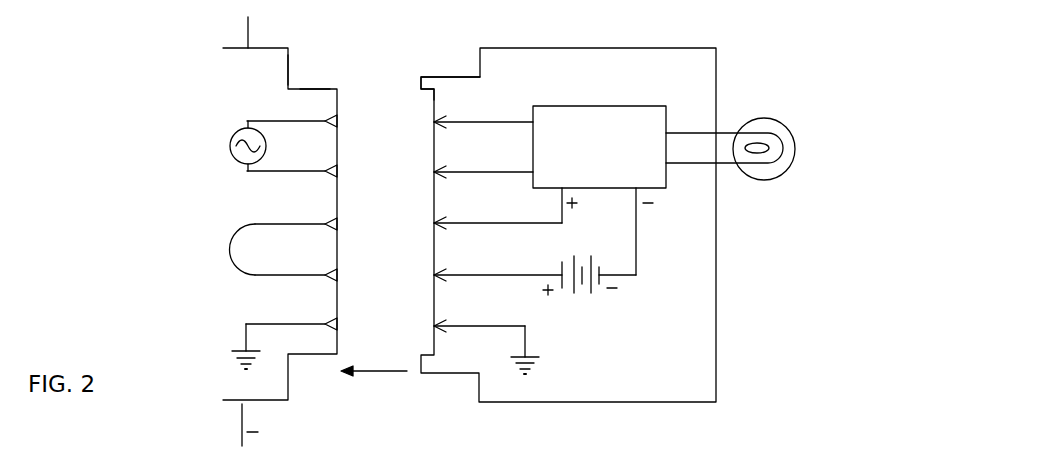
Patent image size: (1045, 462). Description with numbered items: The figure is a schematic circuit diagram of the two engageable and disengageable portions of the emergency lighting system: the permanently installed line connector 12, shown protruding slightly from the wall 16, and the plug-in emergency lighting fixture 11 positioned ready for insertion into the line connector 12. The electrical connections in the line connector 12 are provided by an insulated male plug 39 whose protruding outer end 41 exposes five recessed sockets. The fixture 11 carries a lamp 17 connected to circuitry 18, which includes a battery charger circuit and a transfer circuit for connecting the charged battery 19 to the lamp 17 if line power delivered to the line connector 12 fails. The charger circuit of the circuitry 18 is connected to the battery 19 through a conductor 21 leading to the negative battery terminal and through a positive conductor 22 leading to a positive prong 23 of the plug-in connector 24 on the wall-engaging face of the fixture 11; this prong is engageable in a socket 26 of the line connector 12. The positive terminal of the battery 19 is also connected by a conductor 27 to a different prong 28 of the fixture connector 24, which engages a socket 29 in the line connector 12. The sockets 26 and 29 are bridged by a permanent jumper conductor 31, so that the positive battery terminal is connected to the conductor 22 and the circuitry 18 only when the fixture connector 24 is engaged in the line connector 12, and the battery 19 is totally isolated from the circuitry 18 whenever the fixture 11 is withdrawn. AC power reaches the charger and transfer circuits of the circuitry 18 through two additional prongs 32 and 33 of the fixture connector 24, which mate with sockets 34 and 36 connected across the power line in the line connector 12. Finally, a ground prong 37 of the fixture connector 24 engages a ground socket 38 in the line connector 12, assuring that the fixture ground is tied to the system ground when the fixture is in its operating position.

The emergency lighting fixture 11 is at (609, 38).
The line connector 12 is at (303, 41).
The wall 16 is at (291, 227).
The lamp 17 is at (768, 180).
The circuitry 18 is at (655, 106).
The battery 19 is at (583, 290).
The conductor 21 is at (640, 252).
The positive conductor 22 is at (548, 226).
The positive prong 23 is at (461, 218).
The plug-in connector 24 is at (450, 77).
The socket 26 is at (338, 221).
The conductor 27 is at (532, 278).
The prong 28 is at (466, 275).
The socket 29 is at (338, 273).
The permanent jumper conductor 31 is at (232, 252).
The prong 32 is at (461, 118).
The prong 33 is at (461, 168).
The socket 34 is at (338, 119).
The socket 36 is at (338, 169).
The ground prong 37 is at (475, 321).
The ground socket 38 is at (338, 322).
The insulated male plug 39 is at (303, 63).
The protruding outer end 41 is at (322, 89).